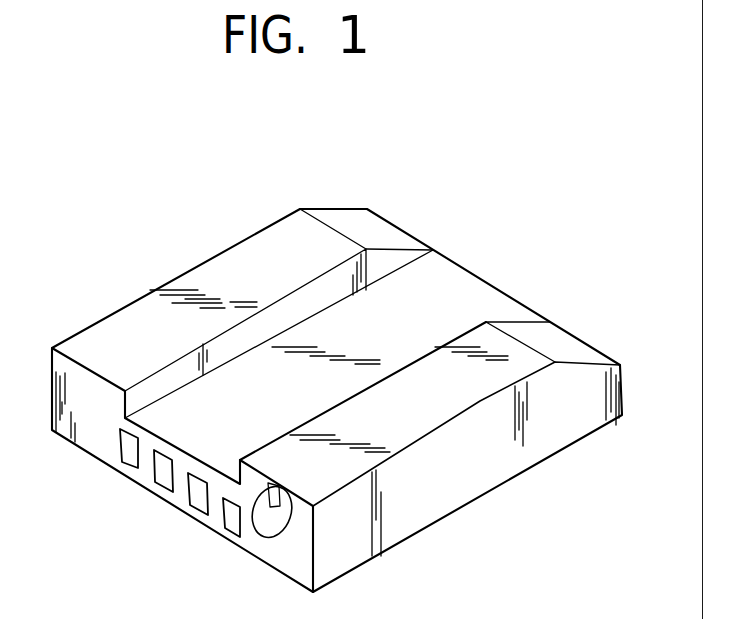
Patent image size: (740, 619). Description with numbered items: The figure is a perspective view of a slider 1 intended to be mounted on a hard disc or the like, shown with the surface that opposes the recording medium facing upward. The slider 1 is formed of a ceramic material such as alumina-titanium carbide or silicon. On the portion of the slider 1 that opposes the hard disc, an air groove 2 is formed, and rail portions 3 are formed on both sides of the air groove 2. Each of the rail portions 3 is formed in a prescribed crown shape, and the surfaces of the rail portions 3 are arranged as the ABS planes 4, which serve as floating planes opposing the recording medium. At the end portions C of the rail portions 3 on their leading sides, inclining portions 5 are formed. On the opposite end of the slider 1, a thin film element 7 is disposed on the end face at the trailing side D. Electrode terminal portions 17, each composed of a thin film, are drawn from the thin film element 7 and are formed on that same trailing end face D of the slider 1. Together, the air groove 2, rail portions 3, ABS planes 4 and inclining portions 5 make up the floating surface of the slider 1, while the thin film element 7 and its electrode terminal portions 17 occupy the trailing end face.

The slider 1 is at (506, 236).
The air groove 2 is at (472, 287).
The rail portion 3 is at (173, 254).
The ABS plane 4 is at (242, 280).
The inclining portion 5 is at (355, 213).
The thin film element 7 is at (272, 537).
The electrode terminal portion 17 is at (228, 505).
The end portion C is at (451, 222).
The trailing side D is at (150, 518).